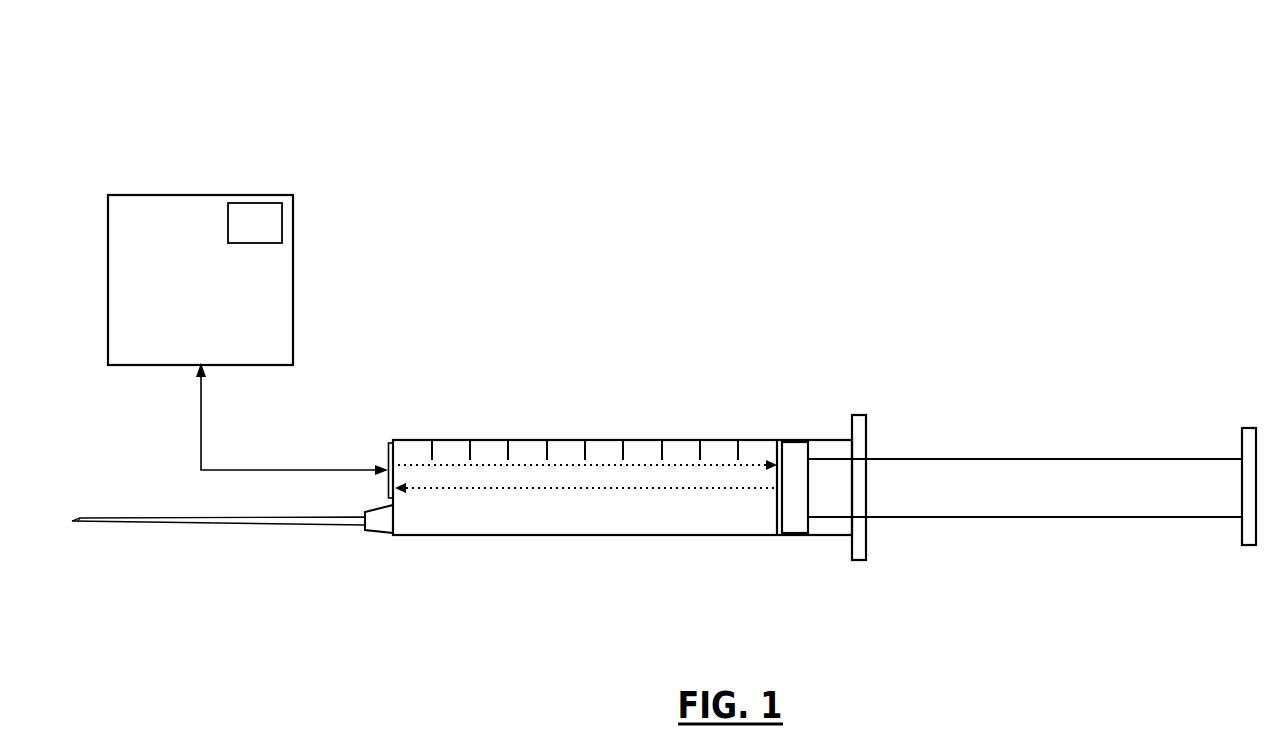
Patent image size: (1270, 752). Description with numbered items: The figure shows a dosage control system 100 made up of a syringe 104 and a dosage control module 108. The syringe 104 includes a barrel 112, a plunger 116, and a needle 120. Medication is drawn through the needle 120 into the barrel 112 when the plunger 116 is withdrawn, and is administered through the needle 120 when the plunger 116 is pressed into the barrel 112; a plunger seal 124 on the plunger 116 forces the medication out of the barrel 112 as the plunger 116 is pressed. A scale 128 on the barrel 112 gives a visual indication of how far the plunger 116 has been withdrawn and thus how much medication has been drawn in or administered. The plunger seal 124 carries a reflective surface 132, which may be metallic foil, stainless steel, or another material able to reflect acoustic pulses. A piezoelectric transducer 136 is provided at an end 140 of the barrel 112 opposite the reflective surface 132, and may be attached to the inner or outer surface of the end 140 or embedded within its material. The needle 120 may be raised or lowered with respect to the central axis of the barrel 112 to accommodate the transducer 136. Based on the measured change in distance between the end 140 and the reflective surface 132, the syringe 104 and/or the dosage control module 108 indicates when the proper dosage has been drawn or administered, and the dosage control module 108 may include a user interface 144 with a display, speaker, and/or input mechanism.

The dosage control system 100 is at (68, 76).
The syringe 104 is at (664, 519).
The dosage control module 108 is at (235, 256).
The barrel 112 is at (623, 535).
The plunger 116 is at (983, 517).
The needle 120 is at (220, 524).
The plunger seal 124 is at (797, 535).
The scale 128 is at (623, 440).
The reflective surface 132 is at (775, 458).
The piezoelectric transducer 136 is at (388, 450).
The end of the barrel 140 is at (393, 452).
The user interface 144 is at (282, 222).